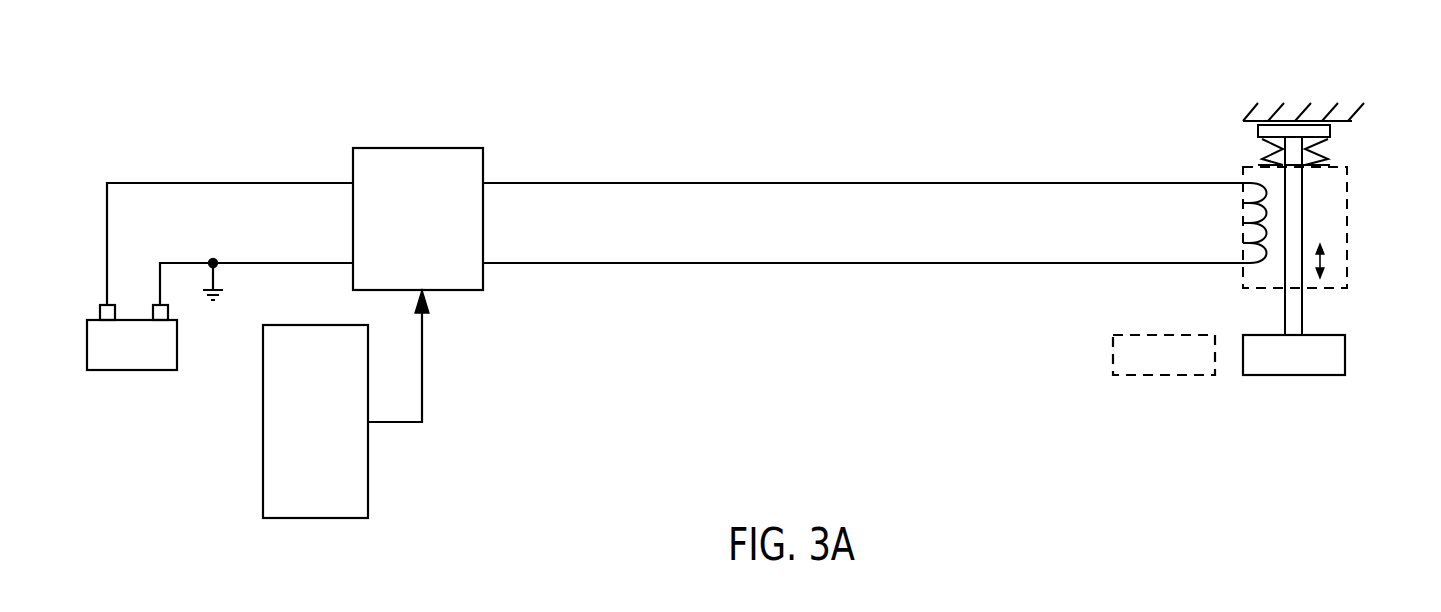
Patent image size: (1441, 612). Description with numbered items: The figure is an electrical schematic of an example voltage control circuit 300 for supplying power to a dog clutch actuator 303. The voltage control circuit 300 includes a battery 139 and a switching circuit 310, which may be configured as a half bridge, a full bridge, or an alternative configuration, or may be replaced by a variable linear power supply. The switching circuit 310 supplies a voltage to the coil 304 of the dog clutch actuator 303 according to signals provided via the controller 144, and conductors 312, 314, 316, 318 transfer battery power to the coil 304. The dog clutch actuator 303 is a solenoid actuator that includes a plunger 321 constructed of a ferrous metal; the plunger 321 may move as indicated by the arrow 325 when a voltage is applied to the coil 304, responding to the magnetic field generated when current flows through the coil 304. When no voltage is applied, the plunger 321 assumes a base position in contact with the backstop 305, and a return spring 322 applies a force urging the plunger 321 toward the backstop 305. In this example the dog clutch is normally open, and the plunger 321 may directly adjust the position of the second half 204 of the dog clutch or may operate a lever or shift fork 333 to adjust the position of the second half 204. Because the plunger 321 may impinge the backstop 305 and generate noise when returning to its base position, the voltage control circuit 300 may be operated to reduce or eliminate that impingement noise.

The voltage control circuit 300 is at (1345, 52).
The backstop 305 is at (1252, 119).
The return spring 322 is at (1312, 148).
The dog clutch actuator 303 is at (1348, 186).
The plunger 321 is at (1304, 225).
The arrow 325 is at (1322, 263).
The coil 304 is at (1247, 264).
The shift fork 333 is at (1295, 323).
The second half of dog clutch 204 is at (1229, 355).
The conductor 312 is at (196, 183).
The conductor 314 is at (280, 263).
The conductor 316 is at (561, 183).
The conductor 318 is at (563, 263).
The switching circuit 310 is at (418, 219).
The battery 139 is at (132, 337).
The controller 144 is at (346, 404).